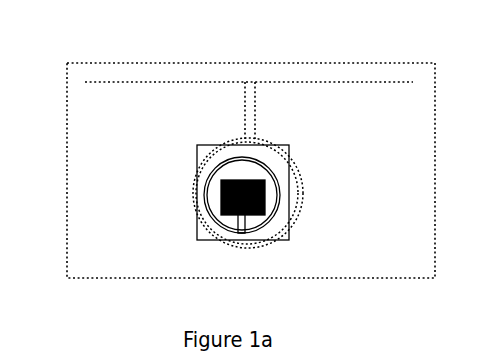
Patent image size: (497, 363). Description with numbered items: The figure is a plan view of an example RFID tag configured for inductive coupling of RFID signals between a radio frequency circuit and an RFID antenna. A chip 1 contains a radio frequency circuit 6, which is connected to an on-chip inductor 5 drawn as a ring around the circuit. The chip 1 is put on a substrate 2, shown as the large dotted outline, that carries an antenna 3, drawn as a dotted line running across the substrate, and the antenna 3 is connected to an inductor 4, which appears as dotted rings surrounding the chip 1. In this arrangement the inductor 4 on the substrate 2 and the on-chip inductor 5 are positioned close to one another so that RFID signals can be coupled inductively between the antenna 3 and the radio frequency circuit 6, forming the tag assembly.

The chip 1 is at (196, 152).
The substrate 2 is at (64, 167).
The antenna 3 is at (146, 81).
The inductor 4 is at (306, 166).
The on-chip inductor 5 is at (276, 222).
The radio frequency circuit 6 is at (243, 206).